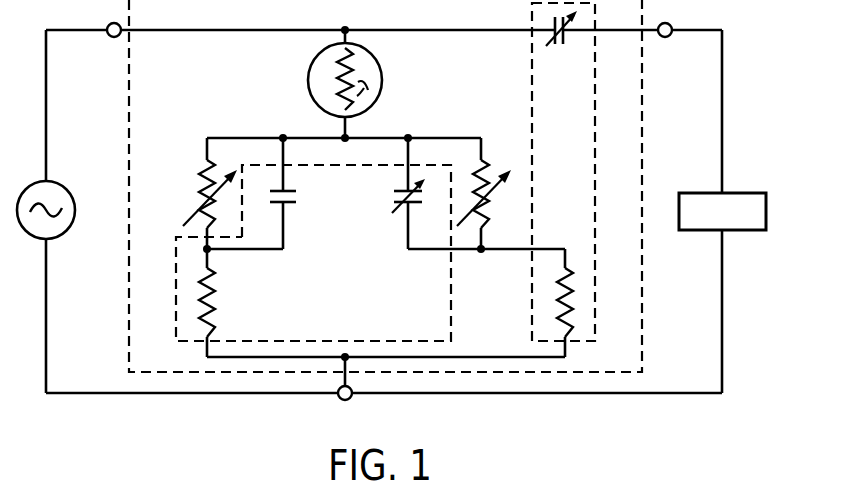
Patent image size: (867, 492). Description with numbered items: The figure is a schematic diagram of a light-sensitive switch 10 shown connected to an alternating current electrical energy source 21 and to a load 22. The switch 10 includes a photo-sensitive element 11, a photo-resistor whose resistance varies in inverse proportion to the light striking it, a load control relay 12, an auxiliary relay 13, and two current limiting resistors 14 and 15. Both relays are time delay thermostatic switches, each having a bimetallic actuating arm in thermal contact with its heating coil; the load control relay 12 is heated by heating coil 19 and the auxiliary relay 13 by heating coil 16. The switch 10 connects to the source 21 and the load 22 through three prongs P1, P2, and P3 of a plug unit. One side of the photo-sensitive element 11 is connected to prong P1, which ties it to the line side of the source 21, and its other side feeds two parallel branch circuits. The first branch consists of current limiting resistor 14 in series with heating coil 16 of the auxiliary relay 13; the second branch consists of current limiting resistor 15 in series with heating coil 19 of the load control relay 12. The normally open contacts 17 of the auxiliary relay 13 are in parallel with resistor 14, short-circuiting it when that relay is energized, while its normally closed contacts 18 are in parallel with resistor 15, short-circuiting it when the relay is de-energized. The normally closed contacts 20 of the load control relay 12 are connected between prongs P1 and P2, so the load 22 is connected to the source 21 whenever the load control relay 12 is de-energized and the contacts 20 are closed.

The light-sensitive switch 10 is at (643, 148).
The photo-sensitive element 11 is at (370, 53).
The load control relay 12 is at (596, 188).
The auxiliary relay 13 is at (452, 309).
The current limiting resistor 14 is at (203, 189).
The current limiting resistor 15 is at (494, 166).
The heating coil 16 is at (215, 301).
The normally open contacts 17 is at (286, 193).
The normally closed contacts 18 is at (398, 190).
The heating coil 19 is at (567, 273).
The normally closed contacts 20 is at (572, 42).
The AC electrical energy source 21 is at (56, 184).
The load 22 is at (767, 201).
The prong P1 is at (100, 18).
The prong P2 is at (683, 18).
The prong P3 is at (362, 406).